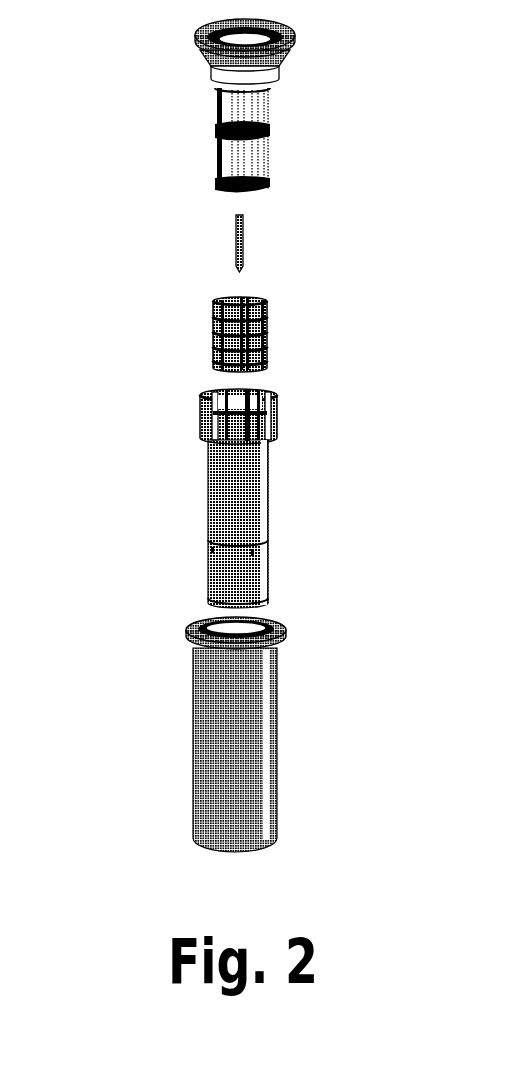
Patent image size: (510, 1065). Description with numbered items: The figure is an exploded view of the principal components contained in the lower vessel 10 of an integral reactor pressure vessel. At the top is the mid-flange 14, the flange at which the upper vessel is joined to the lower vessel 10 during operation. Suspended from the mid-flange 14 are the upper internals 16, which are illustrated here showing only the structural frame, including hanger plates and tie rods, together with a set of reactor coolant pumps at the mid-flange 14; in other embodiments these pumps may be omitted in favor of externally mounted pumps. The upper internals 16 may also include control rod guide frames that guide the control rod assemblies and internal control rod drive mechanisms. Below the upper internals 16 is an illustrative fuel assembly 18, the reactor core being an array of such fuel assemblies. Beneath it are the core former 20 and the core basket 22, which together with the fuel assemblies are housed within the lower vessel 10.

The lower vessel 10 is at (220, 762).
The mid-flange 14 is at (197, 33).
The upper internals 16 is at (300, 46).
The fuel assembly 18 is at (238, 243).
The core former 20 is at (212, 325).
The core basket 22 is at (207, 528).